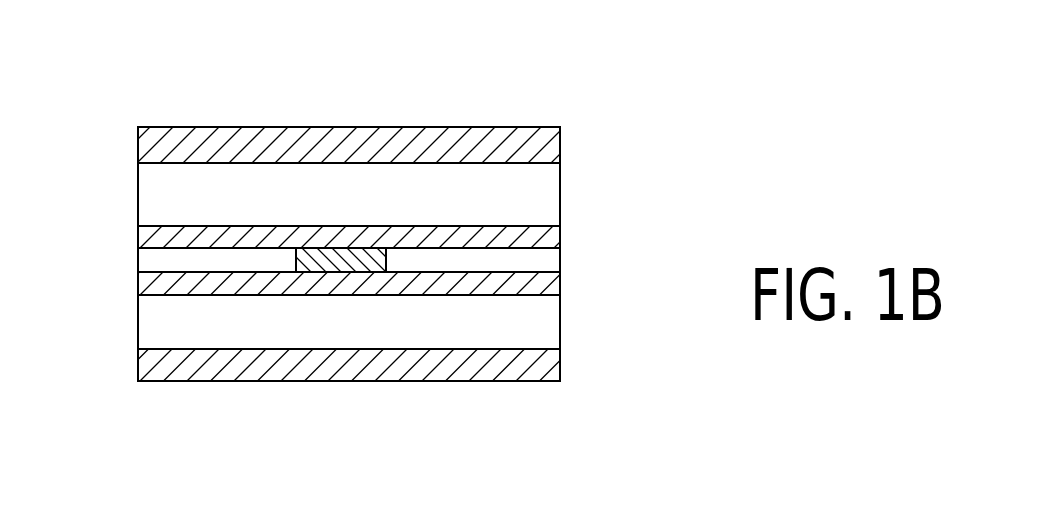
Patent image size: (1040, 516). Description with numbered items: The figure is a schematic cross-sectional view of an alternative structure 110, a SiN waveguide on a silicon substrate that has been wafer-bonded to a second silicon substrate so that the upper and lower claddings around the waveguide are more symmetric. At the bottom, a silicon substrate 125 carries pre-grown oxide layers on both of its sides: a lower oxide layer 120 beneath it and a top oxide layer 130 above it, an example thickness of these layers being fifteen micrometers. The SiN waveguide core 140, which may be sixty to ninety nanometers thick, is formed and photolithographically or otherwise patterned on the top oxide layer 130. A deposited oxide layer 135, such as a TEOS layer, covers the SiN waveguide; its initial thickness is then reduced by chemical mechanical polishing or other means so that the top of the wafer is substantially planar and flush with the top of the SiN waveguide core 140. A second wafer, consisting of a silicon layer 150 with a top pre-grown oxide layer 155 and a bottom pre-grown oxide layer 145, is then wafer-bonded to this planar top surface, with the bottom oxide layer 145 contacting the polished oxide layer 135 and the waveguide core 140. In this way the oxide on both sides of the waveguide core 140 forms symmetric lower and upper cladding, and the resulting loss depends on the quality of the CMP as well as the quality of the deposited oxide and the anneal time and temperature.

The alternative structure 110 is at (568, 52).
The oxide layer 120 is at (553, 363).
The silicon substrate 125 is at (553, 318).
The top oxide layer 130 is at (550, 285).
The oxide layer 135 is at (550, 260).
The SiN waveguide core 140 is at (307, 258).
The bottom pre-grown oxide layer 145 is at (140, 236).
The silicon layer 150 is at (138, 200).
The top pre-grown oxide layer 155 is at (137, 147).